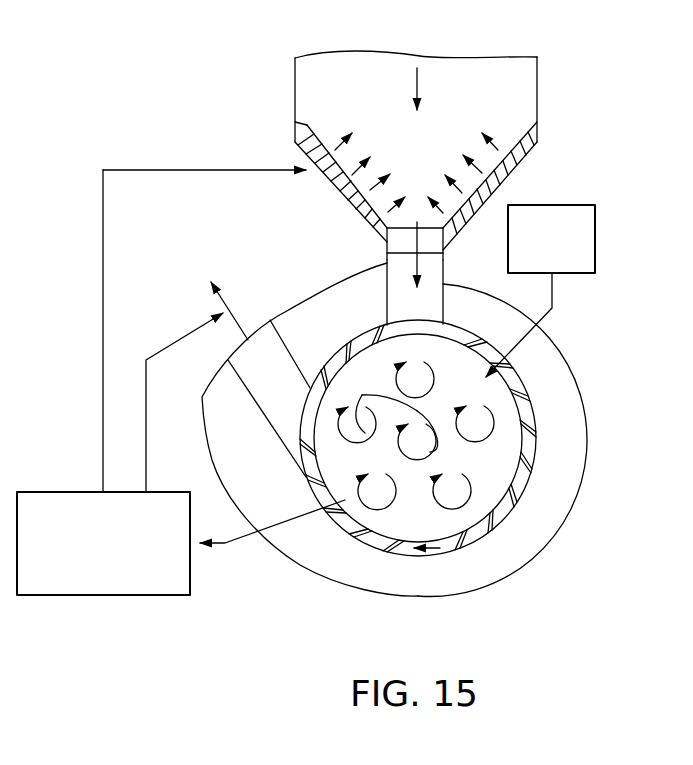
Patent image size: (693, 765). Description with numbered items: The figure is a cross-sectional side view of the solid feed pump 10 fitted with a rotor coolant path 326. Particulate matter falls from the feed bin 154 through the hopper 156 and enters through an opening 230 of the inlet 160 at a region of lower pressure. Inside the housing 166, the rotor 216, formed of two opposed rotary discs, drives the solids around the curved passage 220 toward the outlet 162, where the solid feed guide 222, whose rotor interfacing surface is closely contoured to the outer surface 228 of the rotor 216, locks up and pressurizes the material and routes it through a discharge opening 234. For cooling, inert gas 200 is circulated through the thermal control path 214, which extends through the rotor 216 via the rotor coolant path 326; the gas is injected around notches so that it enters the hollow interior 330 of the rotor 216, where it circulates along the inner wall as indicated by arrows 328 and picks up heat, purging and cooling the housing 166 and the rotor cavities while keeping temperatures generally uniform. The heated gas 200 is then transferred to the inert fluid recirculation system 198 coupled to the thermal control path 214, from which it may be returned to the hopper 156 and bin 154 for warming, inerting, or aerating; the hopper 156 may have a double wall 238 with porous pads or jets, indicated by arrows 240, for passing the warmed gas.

The solid feed pump 10 is at (0, 100).
The feed bin 154 is at (538, 63).
The hopper 156 is at (506, 176).
The inlet 160 is at (444, 282).
The outlet 162 is at (268, 355).
The housing 166 is at (574, 442).
The inert fluid recirculation system 198 is at (100, 596).
The inert gas 200 is at (596, 240).
The thermal control path 214 is at (503, 347).
The rotor 216 is at (477, 554).
The curved passage 220 is at (533, 402).
The solid feed guide 222 is at (320, 343).
The outer surface of the rotor 228 is at (510, 500).
The opening 230 is at (387, 258).
The discharge opening 234 is at (229, 313).
The double wall 238 is at (300, 152).
The arrows 240 is at (340, 150).
The rotor coolant path 326 is at (512, 368).
The arrows 328 is at (416, 411).
The hollow interior 330 is at (404, 514).